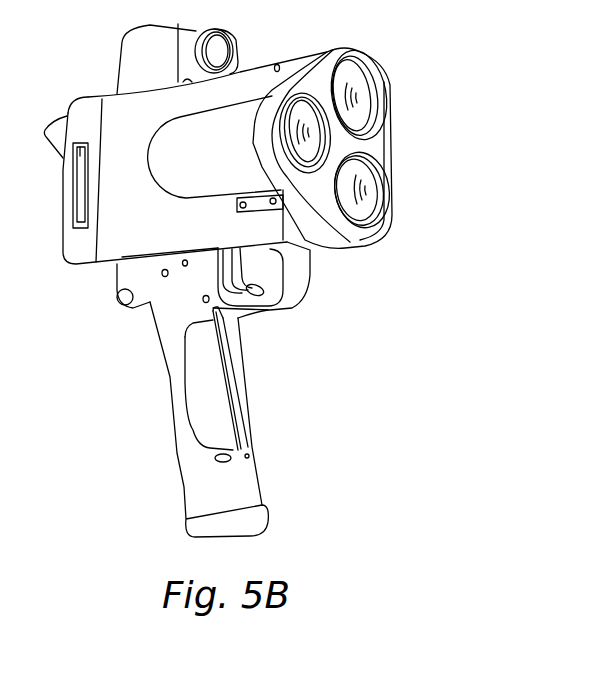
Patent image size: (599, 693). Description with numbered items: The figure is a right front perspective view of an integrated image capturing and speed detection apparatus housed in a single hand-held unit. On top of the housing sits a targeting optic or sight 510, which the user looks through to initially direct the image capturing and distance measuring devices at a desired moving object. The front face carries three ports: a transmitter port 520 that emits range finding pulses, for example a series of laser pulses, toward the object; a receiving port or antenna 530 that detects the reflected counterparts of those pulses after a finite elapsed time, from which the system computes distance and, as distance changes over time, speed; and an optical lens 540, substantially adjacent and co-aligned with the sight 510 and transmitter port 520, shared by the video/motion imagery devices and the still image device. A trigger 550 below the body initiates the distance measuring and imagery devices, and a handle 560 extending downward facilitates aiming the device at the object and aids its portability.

The targeting optic or sight 510 is at (221, 47).
The transmitter port 520 is at (365, 90).
The receiving port or antenna 530 is at (372, 180).
The optical lens 540 is at (320, 141).
The trigger 550 is at (258, 294).
The handle 560 is at (174, 441).